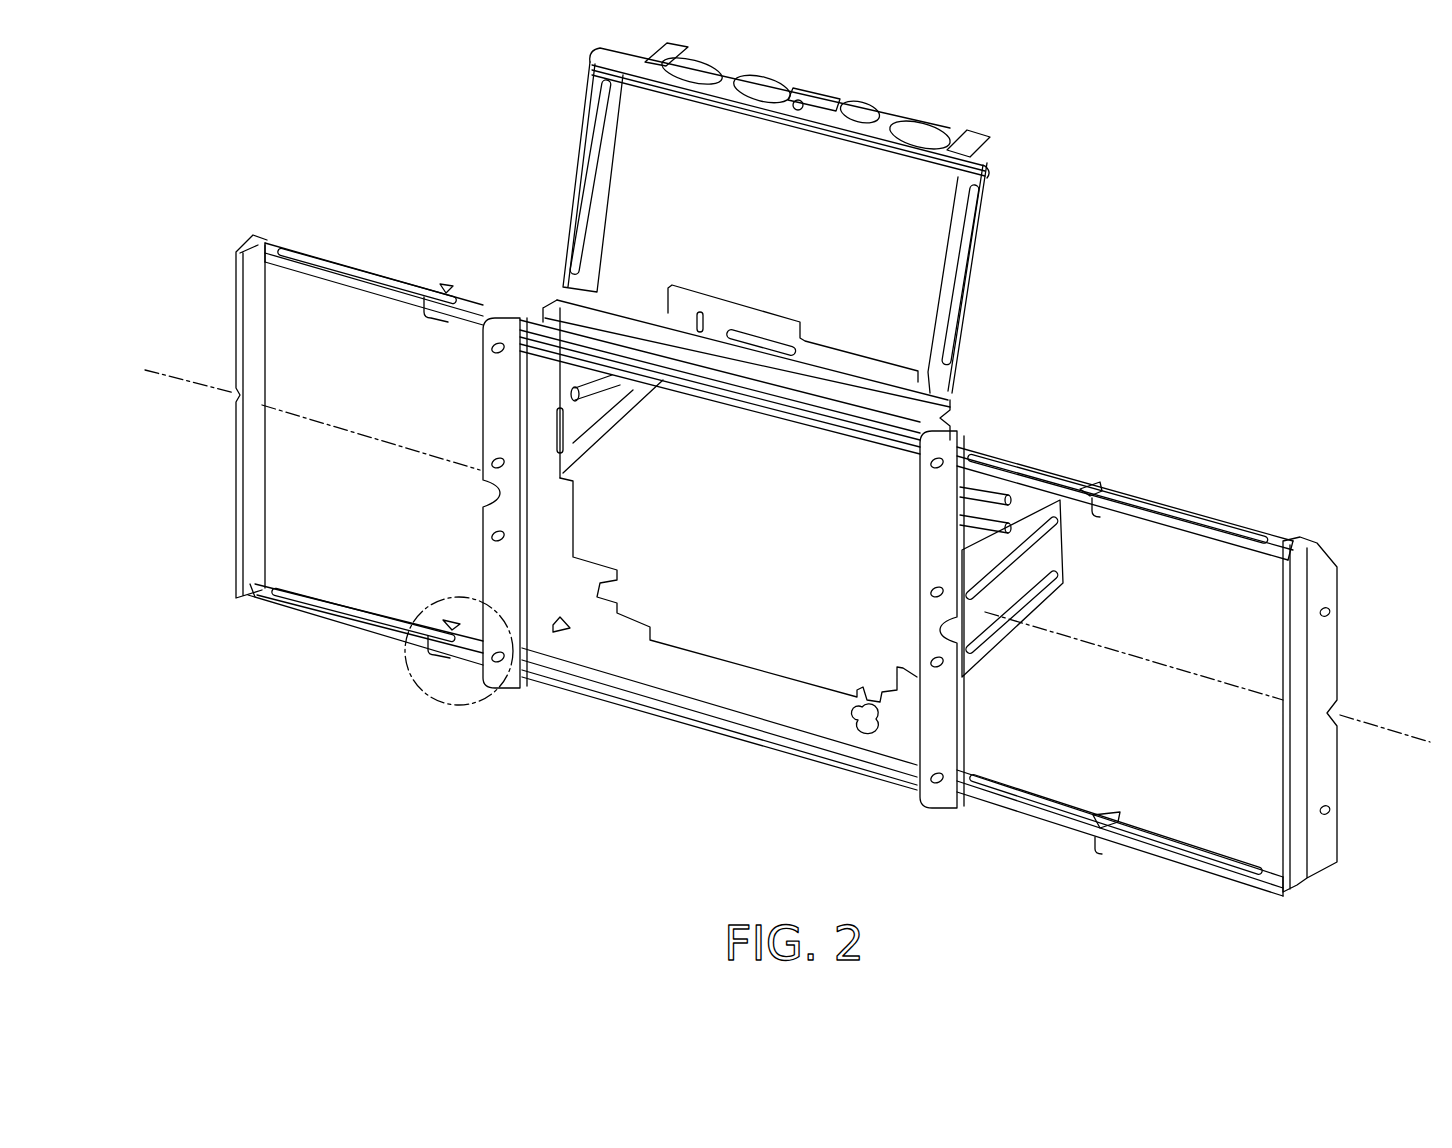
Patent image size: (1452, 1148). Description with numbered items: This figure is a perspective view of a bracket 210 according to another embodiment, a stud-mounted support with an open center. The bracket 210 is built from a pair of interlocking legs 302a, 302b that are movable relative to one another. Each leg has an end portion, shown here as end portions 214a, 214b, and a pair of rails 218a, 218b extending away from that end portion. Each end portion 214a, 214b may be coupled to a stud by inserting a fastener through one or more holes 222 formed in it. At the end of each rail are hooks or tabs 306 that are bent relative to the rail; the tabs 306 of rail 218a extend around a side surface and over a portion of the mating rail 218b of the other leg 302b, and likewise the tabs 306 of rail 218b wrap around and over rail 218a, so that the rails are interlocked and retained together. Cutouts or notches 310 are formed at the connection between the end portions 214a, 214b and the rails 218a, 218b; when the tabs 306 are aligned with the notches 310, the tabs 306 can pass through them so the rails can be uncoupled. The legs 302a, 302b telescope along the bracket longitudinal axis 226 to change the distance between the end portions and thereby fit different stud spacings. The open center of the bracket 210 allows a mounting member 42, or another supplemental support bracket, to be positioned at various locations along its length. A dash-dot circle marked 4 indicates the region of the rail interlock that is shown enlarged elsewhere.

The mounting member 42 is at (560, 198).
The bracket 210 is at (1157, 322).
The end portion 214a is at (1282, 770).
The end portion 214b is at (272, 490).
The rail 218a is at (1190, 540).
The rail 218b is at (385, 305).
The holes 222 is at (1332, 618).
The bracket longitudinal axis 226 is at (1128, 648).
The leg 302a is at (1258, 497).
The leg 302b is at (352, 243).
The tabs 306 is at (430, 288).
The notches 310 is at (262, 582).
The detail area of FIG. 4 is at (478, 697).